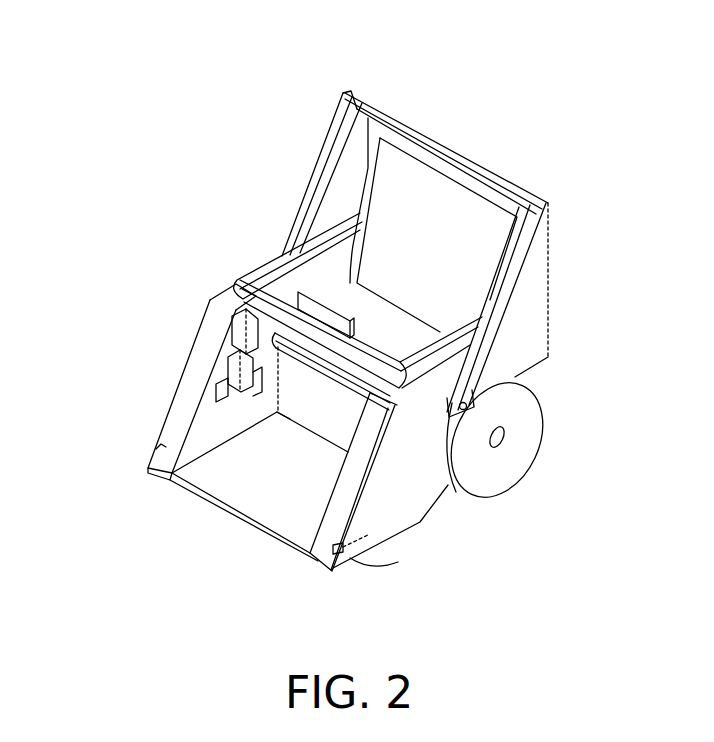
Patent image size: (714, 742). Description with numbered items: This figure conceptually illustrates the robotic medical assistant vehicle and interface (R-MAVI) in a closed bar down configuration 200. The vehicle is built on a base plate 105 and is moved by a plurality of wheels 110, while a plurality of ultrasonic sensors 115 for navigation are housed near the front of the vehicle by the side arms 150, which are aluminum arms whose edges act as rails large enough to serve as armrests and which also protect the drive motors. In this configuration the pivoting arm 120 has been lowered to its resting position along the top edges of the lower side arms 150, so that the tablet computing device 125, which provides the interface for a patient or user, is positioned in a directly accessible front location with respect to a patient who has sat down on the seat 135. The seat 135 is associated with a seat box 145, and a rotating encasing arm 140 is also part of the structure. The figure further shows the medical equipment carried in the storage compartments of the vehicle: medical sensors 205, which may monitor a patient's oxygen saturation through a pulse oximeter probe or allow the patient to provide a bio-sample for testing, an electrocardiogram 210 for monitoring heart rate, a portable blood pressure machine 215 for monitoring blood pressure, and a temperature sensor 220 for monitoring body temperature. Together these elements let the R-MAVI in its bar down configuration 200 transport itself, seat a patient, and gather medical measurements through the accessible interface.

The closed bar down configuration 200 is at (166, 134).
The base plate 105 is at (241, 520).
The wheels 110 is at (496, 494).
The ultrasonic sensors 115 is at (345, 546).
The pivoting arm 120 is at (257, 266).
The tablet computing device 125 is at (365, 288).
The seat 135 is at (343, 380).
The rotating encasing arm 140 is at (503, 323).
The seat box 145 is at (328, 443).
The side arms 150 is at (548, 281).
The medical sensors 205 is at (240, 312).
The electrocardiogram 210 is at (225, 370).
The portable blood pressure machine 215 is at (245, 362).
The temperature sensor 220 is at (220, 384).